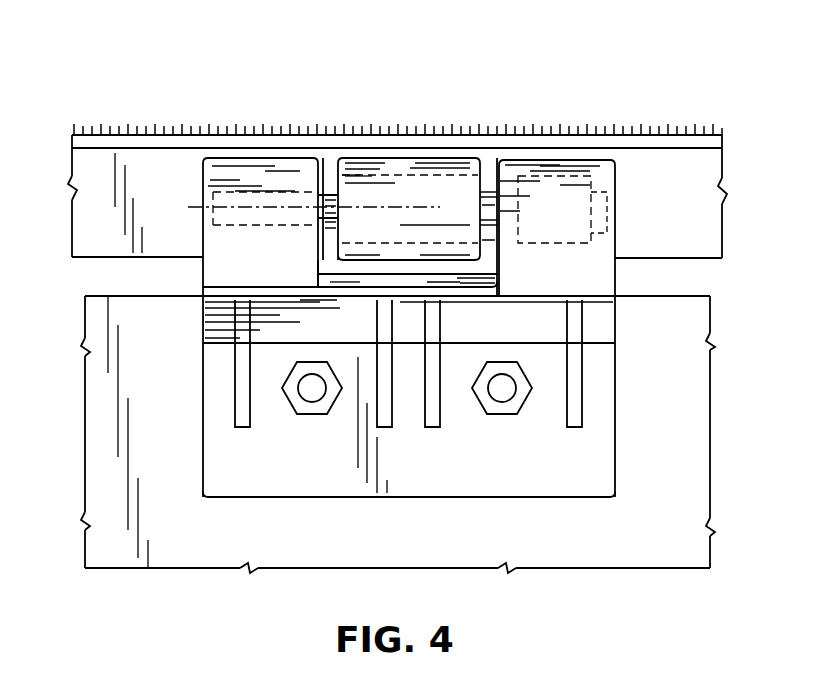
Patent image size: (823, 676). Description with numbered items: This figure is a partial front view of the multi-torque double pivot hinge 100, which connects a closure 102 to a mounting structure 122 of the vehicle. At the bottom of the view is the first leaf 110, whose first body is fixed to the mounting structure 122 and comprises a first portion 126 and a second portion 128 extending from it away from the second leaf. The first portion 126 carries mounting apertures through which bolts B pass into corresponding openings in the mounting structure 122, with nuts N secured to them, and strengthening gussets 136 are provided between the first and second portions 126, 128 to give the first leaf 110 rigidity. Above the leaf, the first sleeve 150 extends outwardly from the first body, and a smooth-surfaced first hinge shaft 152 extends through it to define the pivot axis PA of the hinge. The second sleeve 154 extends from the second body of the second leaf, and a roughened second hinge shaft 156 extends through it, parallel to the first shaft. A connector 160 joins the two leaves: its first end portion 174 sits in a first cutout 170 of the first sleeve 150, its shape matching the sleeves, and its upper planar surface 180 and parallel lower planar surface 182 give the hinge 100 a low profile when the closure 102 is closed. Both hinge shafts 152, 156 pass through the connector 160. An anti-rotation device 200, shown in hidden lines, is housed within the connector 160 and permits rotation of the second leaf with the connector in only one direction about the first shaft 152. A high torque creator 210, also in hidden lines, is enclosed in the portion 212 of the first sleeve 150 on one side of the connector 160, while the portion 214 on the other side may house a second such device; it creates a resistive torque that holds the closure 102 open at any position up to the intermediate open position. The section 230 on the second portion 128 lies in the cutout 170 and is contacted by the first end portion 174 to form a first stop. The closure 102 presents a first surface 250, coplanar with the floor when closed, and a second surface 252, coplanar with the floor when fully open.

The multi-torque double pivot hinge 100 is at (656, 189).
The closure 102 is at (73, 162).
The first leaf 110 is at (582, 490).
The mounting structure 122 is at (693, 463).
The first portion 126 is at (592, 465).
The second portion 128 is at (600, 337).
The strengthening members or gussets 136 is at (242, 408).
The first sleeve 150 is at (604, 160).
The first hinge shaft 152 is at (330, 221).
The second sleeve 154 is at (493, 165).
The second hinge shaft 156 is at (331, 178).
The connector 160 is at (445, 158).
The first cutout 170 is at (488, 165).
The first end portion 174 is at (353, 167).
The upper planar surface 180 is at (393, 157).
The lower planar surface 182 is at (452, 261).
The anti-rotation device 200 is at (407, 175).
The high torque creator 210 is at (608, 233).
The portion of the first sleeve 212 is at (562, 162).
The portion of the first sleeve 214 is at (254, 181).
The section 230 is at (373, 283).
The first surface 250 is at (132, 123).
The second surface 252 is at (93, 260).
The pivot axis PA is at (188, 207).
The bolts B is at (310, 393).
The nuts N is at (320, 413).